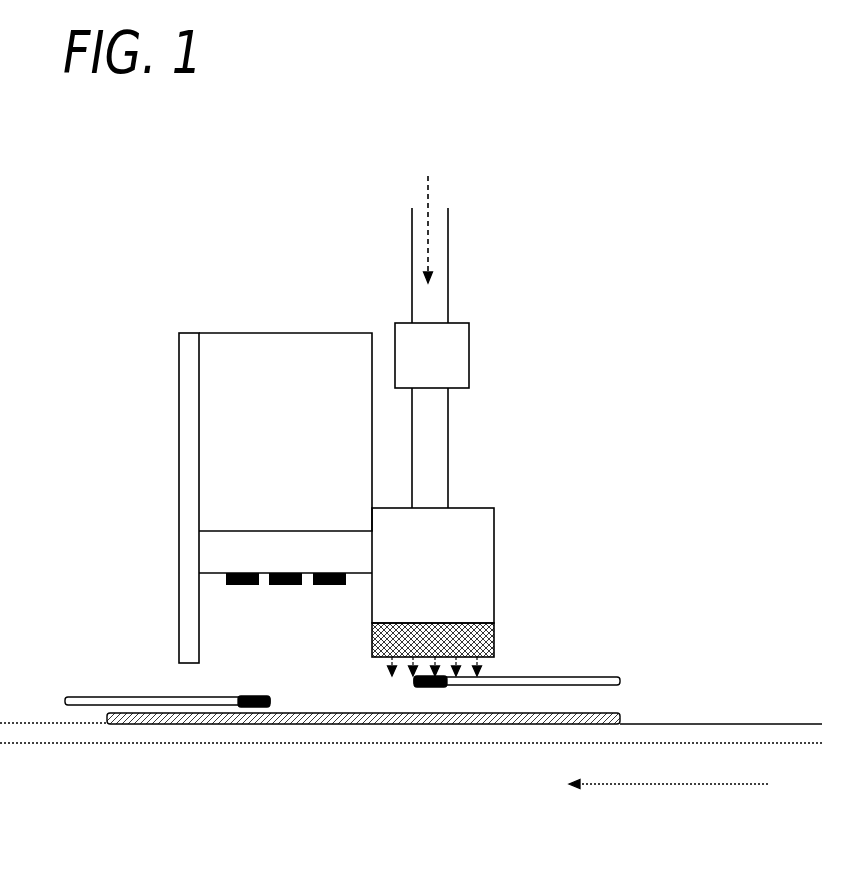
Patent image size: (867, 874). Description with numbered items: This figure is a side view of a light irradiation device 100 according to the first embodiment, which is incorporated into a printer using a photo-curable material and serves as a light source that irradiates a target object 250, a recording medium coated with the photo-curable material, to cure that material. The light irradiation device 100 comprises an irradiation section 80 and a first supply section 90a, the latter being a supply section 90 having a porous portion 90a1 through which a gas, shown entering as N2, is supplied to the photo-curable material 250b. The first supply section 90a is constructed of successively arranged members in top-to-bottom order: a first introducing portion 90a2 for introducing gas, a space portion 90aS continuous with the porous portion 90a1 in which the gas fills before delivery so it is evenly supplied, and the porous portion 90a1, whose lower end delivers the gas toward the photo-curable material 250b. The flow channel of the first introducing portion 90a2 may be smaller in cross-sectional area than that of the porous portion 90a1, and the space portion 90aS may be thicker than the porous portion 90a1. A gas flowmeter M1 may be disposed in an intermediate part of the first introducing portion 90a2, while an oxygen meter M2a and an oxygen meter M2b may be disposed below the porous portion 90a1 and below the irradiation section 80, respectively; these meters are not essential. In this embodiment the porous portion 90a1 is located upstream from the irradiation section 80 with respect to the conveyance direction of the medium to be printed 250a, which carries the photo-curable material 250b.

The light irradiation device 100 is at (640, 210).
The nitrogen gas N2 is at (432, 208).
The gas flowmeter M1 is at (448, 347).
The supply section 90 is at (540, 526).
The first supply section 90a is at (622, 601).
The first introducing portion 90a2 is at (432, 447).
The space portion 90aS is at (473, 535).
The porous portion 90a1 is at (477, 642).
The irradiation section 80 is at (235, 560).
The oxygen meter M2a is at (513, 678).
The oxygen meter M2b is at (133, 697).
The target object 250 is at (757, 680).
The medium to be printed 250a is at (632, 737).
The photo-curable material 250b is at (578, 715).